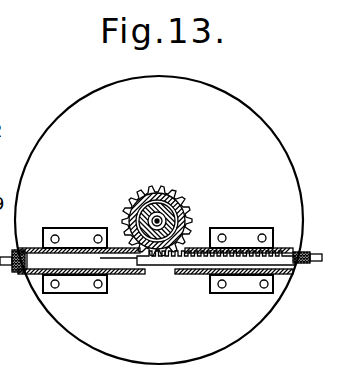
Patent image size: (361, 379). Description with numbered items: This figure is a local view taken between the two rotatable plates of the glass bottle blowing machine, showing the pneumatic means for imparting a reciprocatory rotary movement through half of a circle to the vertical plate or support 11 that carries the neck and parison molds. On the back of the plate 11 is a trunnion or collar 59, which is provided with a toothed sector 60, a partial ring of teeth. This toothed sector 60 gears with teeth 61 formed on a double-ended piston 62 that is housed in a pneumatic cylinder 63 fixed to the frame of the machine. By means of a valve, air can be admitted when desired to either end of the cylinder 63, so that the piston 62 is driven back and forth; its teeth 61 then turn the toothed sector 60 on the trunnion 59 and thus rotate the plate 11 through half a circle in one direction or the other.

The vertical plate or support 11 is at (159, 220).
The trunnion or collar 59 is at (140, 212).
The toothed sector 60 is at (188, 206).
The teeth 61 is at (148, 276).
The double-ended piston 62 is at (200, 275).
The pneumatic cylinder 63 is at (23, 277).